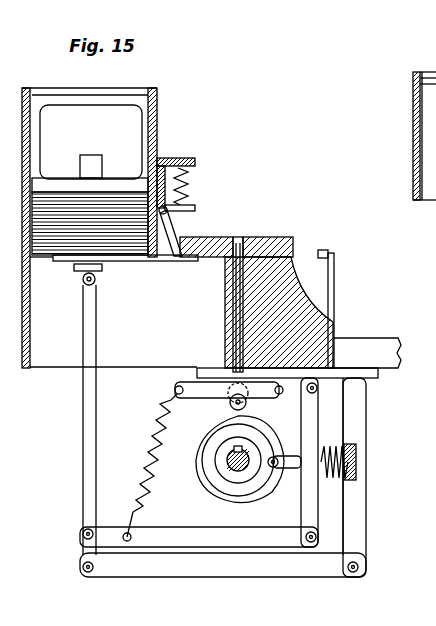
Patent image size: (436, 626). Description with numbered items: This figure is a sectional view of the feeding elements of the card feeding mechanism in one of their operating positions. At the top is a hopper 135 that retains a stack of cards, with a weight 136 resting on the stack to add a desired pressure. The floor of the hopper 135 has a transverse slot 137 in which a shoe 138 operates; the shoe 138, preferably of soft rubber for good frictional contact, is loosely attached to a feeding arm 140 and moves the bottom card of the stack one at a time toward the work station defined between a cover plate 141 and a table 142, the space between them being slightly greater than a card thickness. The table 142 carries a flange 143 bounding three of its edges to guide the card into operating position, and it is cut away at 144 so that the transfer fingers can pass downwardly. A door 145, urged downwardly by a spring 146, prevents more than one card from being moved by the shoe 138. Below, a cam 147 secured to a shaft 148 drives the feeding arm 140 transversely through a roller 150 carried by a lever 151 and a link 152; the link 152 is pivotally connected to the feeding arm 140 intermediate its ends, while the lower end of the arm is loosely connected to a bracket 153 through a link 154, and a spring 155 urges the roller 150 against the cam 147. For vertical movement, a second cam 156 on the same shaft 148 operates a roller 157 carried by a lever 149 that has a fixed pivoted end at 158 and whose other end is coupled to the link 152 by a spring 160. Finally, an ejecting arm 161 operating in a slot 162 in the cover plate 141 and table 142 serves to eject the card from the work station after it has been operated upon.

The hopper 135 is at (152, 104).
The weight 136 is at (112, 167).
The transverse slot 137 is at (42, 280).
The shoe 138 is at (101, 268).
The feeding arm 140 is at (82, 385).
The cover plate 141 is at (257, 237).
The table 142 is at (316, 326).
The flange 143 is at (326, 255).
The cut-away 144 is at (336, 264).
The door 145 is at (170, 226).
The spring 146 is at (192, 178).
The cam 147 is at (208, 458).
The shaft 148 is at (234, 470).
The lever 149 is at (200, 390).
The roller 150 is at (286, 462).
The lever 151 is at (318, 480).
The link 152 is at (200, 535).
The bracket 153 is at (358, 406).
The link 154 is at (80, 563).
The spring 155 is at (355, 462).
The second cam 156 is at (200, 440).
The roller 157 is at (250, 404).
The fixed pivot 158 is at (325, 363).
The spring 160 is at (175, 392).
The ejecting arm 161 is at (197, 295).
The slot 162 is at (228, 279).